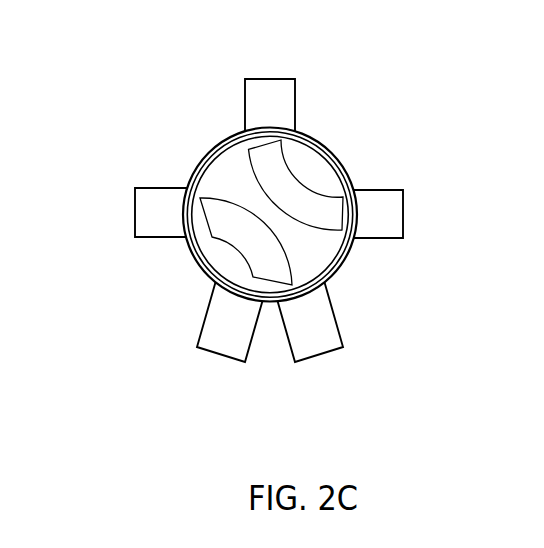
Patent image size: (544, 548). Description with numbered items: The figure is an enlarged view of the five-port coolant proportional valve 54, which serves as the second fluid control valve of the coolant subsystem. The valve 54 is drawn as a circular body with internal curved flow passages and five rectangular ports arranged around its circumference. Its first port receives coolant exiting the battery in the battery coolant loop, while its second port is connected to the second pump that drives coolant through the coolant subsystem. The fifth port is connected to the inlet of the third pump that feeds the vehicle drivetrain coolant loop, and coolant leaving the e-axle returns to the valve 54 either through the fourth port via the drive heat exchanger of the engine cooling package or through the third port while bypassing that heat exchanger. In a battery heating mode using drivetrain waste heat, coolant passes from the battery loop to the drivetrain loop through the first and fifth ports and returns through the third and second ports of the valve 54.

The five-port coolant proportional valve 54 is at (195, 99).